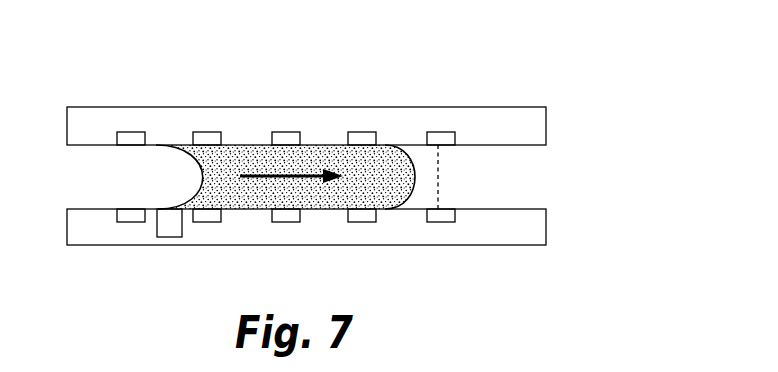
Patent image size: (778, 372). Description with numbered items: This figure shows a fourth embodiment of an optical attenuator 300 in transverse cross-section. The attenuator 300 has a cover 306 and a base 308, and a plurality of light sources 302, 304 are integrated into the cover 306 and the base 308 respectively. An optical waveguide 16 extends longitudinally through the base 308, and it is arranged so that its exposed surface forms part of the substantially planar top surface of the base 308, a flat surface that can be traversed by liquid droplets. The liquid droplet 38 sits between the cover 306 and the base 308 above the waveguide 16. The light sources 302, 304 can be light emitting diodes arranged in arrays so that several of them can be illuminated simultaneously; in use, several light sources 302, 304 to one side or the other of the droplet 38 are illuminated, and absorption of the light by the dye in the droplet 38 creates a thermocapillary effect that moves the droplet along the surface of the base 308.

The attenuator 300 is at (567, 56).
The attenuator cover 306 is at (165, 122).
The base 308 is at (112, 235).
The light source 302 is at (443, 133).
The light source 304 is at (447, 222).
The fluid 38 is at (363, 178).
The optical waveguide 16 is at (170, 233).